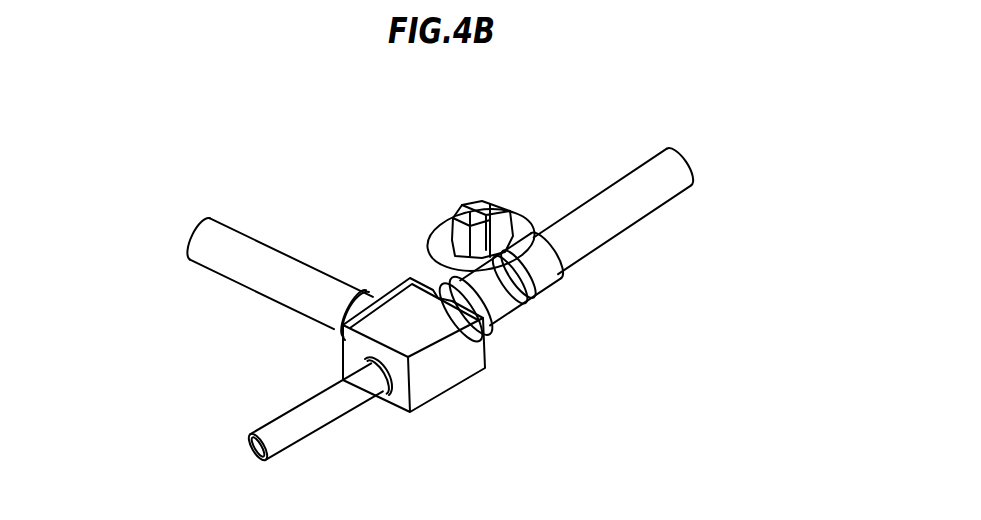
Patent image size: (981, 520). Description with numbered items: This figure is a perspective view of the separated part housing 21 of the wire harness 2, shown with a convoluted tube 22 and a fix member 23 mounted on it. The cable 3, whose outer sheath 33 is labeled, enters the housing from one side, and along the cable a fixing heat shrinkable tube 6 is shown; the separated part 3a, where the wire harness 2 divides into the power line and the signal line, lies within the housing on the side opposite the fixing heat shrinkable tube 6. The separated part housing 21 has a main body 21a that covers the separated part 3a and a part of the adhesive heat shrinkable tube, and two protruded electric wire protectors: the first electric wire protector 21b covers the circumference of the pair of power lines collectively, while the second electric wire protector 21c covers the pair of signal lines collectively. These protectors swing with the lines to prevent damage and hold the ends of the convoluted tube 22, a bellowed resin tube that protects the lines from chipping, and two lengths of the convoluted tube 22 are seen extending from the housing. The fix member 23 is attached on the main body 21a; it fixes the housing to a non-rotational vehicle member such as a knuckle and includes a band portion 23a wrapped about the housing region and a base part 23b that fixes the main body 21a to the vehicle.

The wire harness 2 is at (300, 149).
The cable 3 is at (685, 158).
The sheath 33 is at (658, 195).
The separated part 3a is at (440, 430).
The fixing heat shrinkable tube 6 is at (542, 288).
The separated part housing 21 is at (465, 378).
The main body 21a is at (412, 297).
The first electric wire protector 21b is at (355, 312).
The second electric wire protector 21c is at (363, 362).
The convoluted tube 22 is at (215, 262).
The fix member 23 is at (516, 219).
The fix member band 23a is at (513, 320).
The base part 23b is at (480, 212).